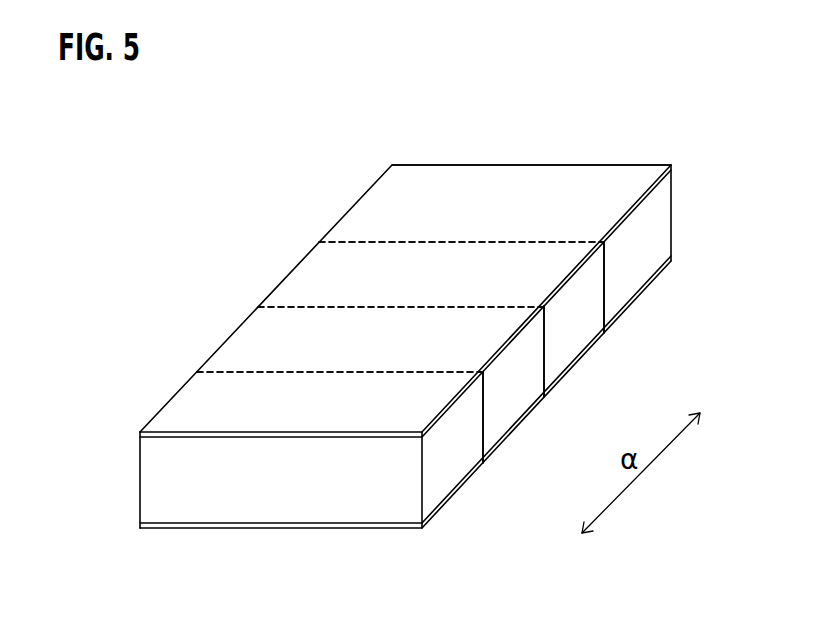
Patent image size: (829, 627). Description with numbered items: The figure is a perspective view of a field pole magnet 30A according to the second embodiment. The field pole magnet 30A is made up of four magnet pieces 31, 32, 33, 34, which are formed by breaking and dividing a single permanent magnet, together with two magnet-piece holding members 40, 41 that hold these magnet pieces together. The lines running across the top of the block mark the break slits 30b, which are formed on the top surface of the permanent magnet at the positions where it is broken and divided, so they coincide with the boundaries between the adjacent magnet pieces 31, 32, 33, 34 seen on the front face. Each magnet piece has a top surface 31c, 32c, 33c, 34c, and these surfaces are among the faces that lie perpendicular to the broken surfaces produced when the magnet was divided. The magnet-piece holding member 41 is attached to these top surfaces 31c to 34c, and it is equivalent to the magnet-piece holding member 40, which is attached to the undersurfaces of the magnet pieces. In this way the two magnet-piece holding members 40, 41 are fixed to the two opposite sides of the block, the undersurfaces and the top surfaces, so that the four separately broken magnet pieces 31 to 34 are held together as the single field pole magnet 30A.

The field pole magnet 30A is at (392, 164).
The break slit 30b is at (265, 372).
The magnet piece 31 is at (445, 462).
The magnet piece 32 is at (503, 402).
The magnet piece 33 is at (570, 333).
The magnet piece 34 is at (647, 265).
The top surface of magnet piece 31c is at (178, 398).
The top surface of magnet piece 32c is at (230, 347).
The top surface of magnet piece 33c is at (557, 265).
The top surface of magnet piece 34c is at (622, 190).
The magnet-piece holding member 40 is at (420, 528).
The magnet-piece holding member 41 is at (140, 432).